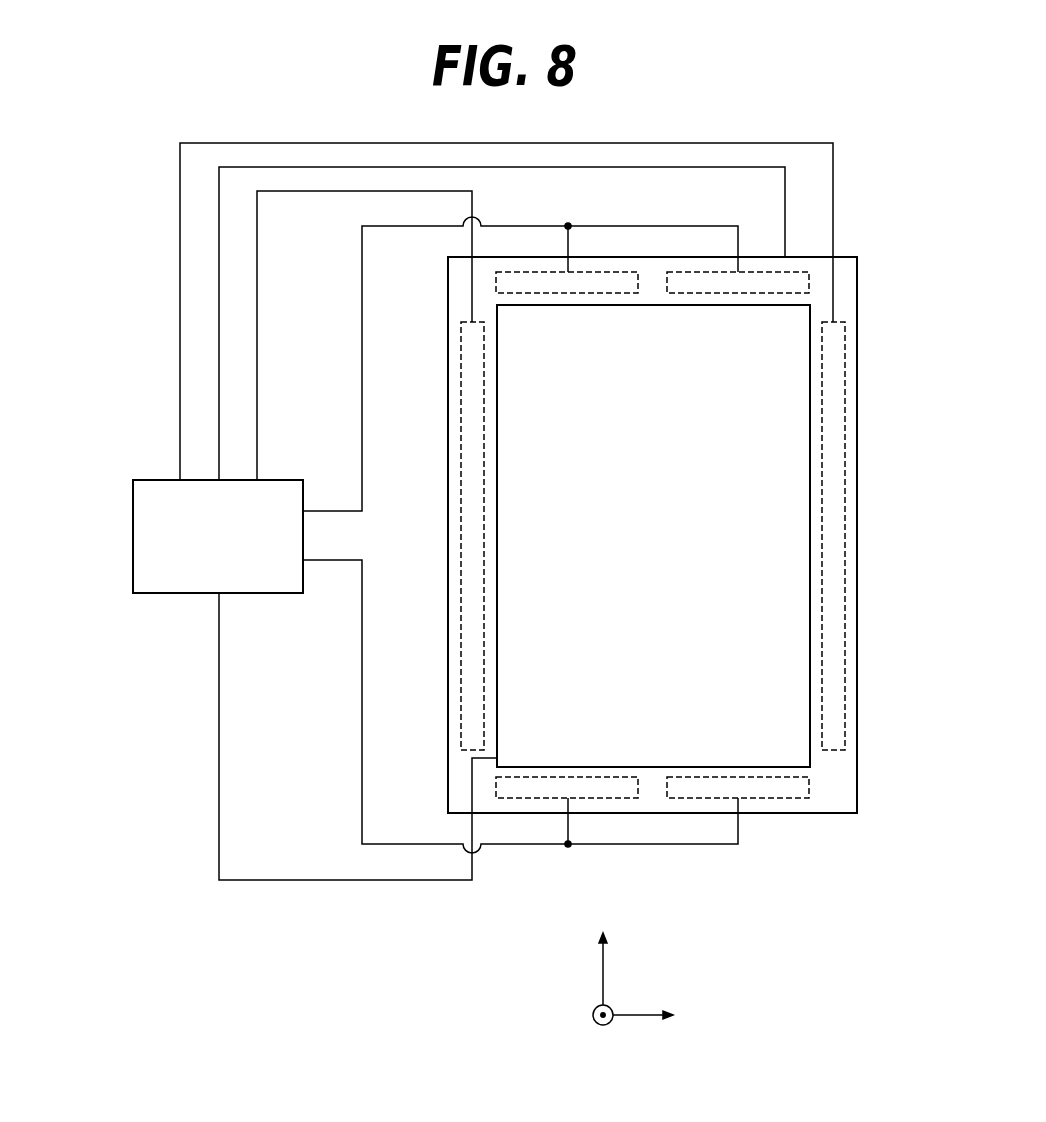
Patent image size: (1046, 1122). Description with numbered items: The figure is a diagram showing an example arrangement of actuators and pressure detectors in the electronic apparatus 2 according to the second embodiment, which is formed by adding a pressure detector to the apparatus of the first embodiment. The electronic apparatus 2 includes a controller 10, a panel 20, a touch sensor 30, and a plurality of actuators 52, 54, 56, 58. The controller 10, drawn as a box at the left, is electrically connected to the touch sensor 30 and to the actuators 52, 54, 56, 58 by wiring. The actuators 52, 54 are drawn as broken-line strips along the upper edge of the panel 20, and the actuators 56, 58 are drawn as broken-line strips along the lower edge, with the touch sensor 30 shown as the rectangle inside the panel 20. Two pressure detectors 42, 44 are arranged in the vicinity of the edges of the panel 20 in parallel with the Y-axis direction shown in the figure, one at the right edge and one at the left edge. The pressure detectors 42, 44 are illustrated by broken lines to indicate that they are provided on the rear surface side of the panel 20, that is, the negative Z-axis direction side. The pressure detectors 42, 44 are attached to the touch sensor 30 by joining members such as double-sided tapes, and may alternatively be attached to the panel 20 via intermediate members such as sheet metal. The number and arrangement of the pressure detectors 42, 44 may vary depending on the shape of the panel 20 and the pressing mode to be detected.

The electronic apparatus 2 is at (794, 838).
The controller 10 is at (133, 540).
The panel 20 is at (448, 283).
The touch sensor 30 is at (810, 758).
The pressure detector 42 is at (848, 520).
The pressure detector 44 is at (461, 522).
The actuator 52 is at (568, 297).
The actuator 54 is at (738, 297).
The actuator 56 is at (568, 777).
The actuator 58 is at (738, 777).